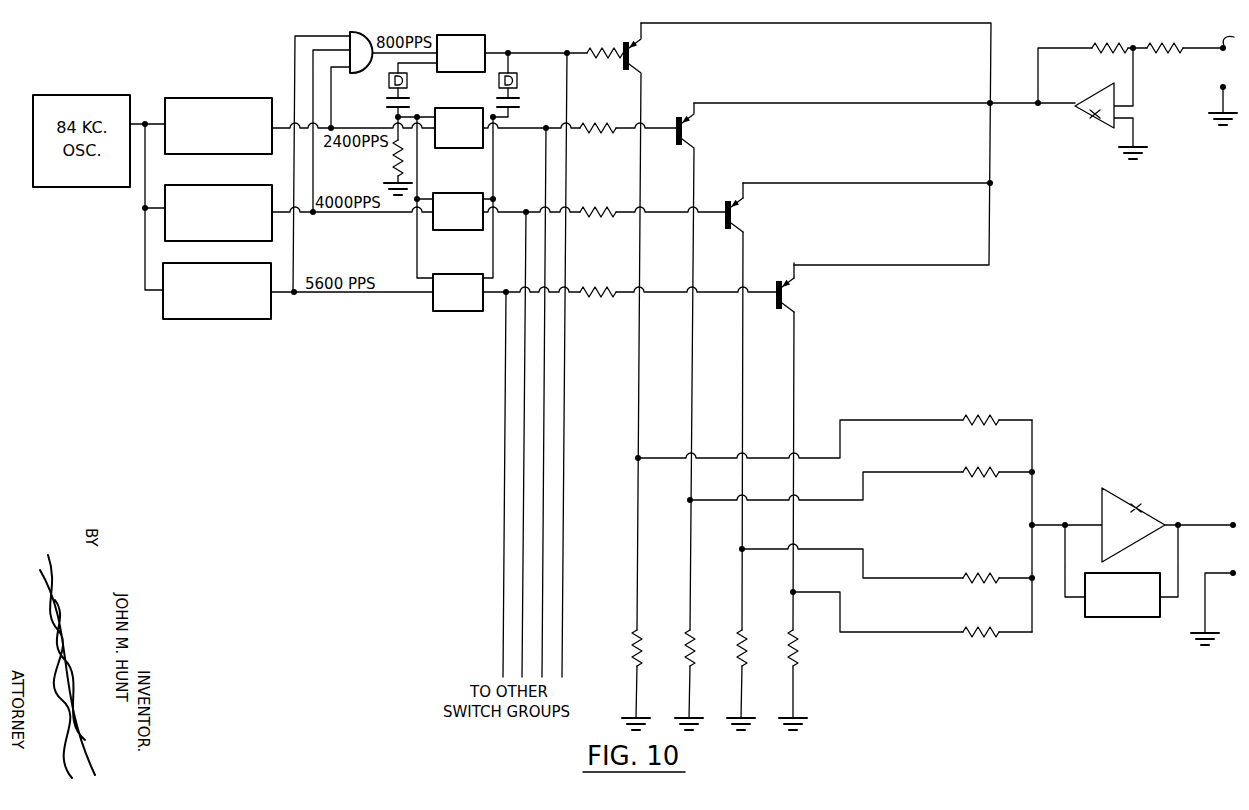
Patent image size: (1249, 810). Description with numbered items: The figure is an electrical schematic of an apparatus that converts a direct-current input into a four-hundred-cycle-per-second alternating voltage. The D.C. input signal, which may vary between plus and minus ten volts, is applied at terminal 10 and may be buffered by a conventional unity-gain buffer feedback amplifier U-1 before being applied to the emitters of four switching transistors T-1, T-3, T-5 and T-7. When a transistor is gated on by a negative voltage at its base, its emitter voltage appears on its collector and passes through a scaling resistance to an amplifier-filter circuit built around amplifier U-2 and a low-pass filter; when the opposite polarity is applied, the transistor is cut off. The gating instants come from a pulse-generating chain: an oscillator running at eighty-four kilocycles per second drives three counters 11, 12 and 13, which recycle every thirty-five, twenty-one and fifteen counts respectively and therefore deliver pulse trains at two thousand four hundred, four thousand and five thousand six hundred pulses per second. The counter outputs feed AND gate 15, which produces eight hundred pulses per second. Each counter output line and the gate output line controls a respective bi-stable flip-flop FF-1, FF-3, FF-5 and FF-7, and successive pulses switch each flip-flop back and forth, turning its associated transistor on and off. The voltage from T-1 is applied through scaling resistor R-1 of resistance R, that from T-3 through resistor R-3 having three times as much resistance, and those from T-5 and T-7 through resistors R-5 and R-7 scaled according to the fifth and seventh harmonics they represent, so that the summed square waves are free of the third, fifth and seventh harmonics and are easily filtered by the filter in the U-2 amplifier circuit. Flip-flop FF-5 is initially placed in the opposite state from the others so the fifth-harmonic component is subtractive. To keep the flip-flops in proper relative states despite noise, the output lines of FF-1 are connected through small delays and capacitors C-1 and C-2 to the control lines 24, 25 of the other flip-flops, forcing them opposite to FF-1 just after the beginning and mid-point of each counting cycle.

The terminal 10 is at (1219, 77).
The counter 11 is at (259, 97).
The counter 12 is at (259, 183).
The counter 13 is at (259, 261).
The AND gate 15 is at (365, 61).
The control line 24 is at (418, 184).
The control line 25 is at (493, 186).
The capacitor C-1 is at (519, 86).
The capacitor C-2 is at (394, 129).
The flip-flop FF-1 is at (461, 53).
The flip-flop FF-3 is at (459, 128).
The flip-flop FF-5 is at (458, 211).
The flip-flop FF-7 is at (458, 292).
The switching transistor T-1 is at (637, 376).
The switching transistor T-3 is at (696, 416).
The switching transistor T-5 is at (747, 456).
The switching transistor T-7 is at (798, 496).
The scaling resistor R-1 is at (962, 402).
The scaling resistor R-3 is at (962, 454).
The scaling resistor R-5 is at (962, 560).
The scaling resistor R-7 is at (962, 614).
The unity-gain buffer feedback amplifier U-1 is at (1106, 101).
The amplifier U-2 is at (1134, 566).